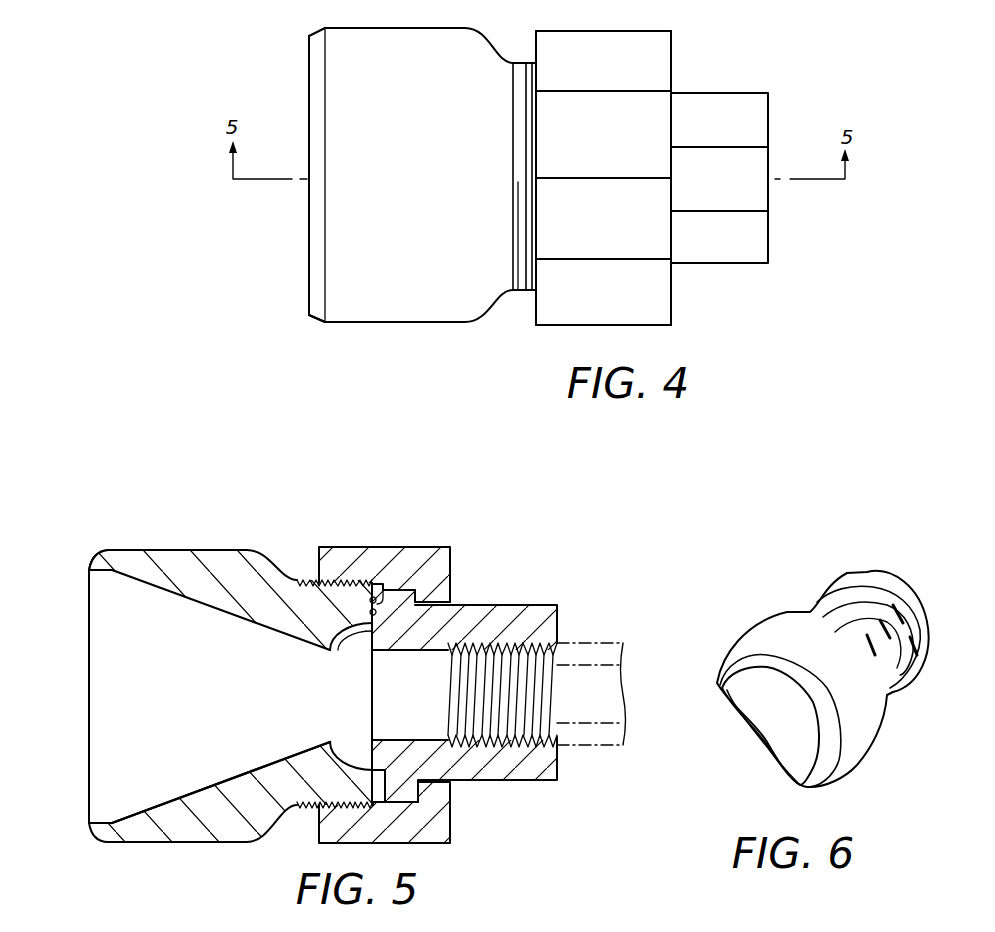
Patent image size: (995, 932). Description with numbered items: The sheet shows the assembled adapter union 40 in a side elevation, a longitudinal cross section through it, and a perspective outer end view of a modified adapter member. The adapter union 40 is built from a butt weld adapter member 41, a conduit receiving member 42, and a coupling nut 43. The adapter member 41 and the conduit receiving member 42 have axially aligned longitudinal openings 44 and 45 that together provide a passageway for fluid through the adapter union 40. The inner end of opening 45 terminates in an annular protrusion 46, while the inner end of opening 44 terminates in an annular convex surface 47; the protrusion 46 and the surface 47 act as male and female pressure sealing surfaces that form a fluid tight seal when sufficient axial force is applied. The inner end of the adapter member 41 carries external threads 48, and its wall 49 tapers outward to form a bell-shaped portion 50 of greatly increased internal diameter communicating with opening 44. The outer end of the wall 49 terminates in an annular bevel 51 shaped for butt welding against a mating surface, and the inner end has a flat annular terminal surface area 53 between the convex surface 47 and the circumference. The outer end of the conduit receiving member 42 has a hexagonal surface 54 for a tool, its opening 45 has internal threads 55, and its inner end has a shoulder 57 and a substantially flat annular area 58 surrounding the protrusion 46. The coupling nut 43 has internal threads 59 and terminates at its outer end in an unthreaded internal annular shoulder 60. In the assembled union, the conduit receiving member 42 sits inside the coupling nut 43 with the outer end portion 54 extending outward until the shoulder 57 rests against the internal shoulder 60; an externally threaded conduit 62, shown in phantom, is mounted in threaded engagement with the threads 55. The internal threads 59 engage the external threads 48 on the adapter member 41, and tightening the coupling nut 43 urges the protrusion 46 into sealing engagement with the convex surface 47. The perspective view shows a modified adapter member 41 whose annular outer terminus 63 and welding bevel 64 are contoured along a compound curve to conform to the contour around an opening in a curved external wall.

In FIG. 4, the adapter union 40 is at (504, 27).
In FIG. 4, the butt weld adapter member 41 is at (421, 175).
In FIG. 5, the butt weld adapter member 41 is at (233, 553).
In FIG. 6, the butt weld adapter member 41 is at (753, 639).
In FIG. 4, the conduit receiving member 42 is at (742, 265).
In FIG. 5, the conduit receiving member 42 is at (507, 616).
In FIG. 4, the coupling nut 43 is at (617, 147).
In FIG. 5, the coupling nut 43 is at (390, 558).
In FIG. 5, the opening 44 is at (351, 724).
In FIG. 5, the opening 45 is at (427, 720).
In FIG. 5, the annular protrusion 46 is at (372, 645).
In FIG. 5, the annular convex surface 47 is at (359, 648).
In FIG. 5, the external threads 48 is at (307, 808).
In FIG. 6, the external threads 48 is at (847, 594).
In FIG. 5, the wall 49 is at (267, 762).
In FIG. 4, the bell-shaped portion 50 is at (328, 322).
In FIG. 5, the bell-shaped portion 50 is at (182, 698).
In FIG. 4, the annular bevel 51 is at (315, 283).
In FIG. 5, the annular bevel 51 is at (106, 550).
In FIG. 4, the flat annular terminal surface area 53 is at (308, 215).
In FIG. 5, the flat annular terminal surface area 53 is at (89, 662).
In FIG. 4, the hexagonal surface 54 is at (732, 132).
In FIG. 5, the internal threads 55 is at (556, 648).
In FIG. 5, the shoulder 57 is at (403, 790).
In FIG. 5, the flat annular area 58 is at (400, 588).
In FIG. 5, the internal threads 59 is at (350, 582).
In FIG. 5, the internal annular shoulder 60 is at (447, 590).
In FIG. 5, the conduit 62 is at (607, 750).
In FIG. 6, the annular outer terminus 63 is at (797, 784).
In FIG. 6, the welding bevel 64 is at (823, 788).